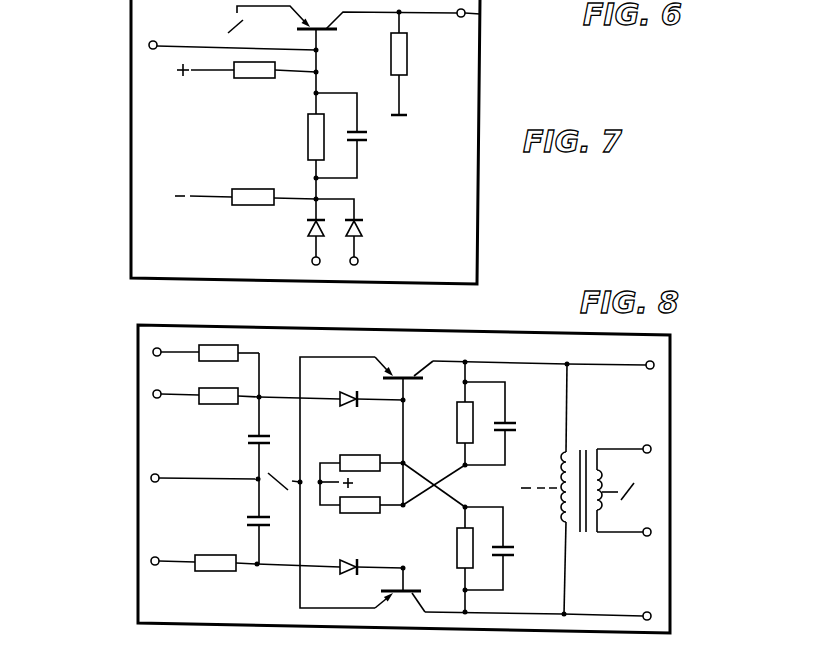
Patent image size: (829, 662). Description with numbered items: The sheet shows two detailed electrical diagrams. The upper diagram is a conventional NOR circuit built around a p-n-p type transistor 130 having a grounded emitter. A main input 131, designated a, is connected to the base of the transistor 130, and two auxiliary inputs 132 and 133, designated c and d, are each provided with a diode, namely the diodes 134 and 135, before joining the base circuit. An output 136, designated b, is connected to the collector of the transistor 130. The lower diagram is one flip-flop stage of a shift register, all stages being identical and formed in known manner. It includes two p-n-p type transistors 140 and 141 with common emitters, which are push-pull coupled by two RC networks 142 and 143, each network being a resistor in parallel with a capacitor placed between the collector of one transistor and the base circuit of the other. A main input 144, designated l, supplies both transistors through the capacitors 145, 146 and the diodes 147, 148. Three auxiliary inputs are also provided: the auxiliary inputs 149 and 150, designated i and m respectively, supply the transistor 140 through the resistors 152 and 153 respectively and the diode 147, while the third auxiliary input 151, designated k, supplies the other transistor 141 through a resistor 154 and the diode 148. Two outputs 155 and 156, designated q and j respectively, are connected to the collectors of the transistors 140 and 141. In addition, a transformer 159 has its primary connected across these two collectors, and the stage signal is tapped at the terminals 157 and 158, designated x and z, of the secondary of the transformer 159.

In FIG. 7, the p-n-p type transistor 130 is at (327, 36).
In FIG. 7, the main input 131 is at (153, 41).
In FIG. 7, the auxiliary input 132 is at (314, 265).
In FIG. 7, the auxiliary input 133 is at (354, 265).
In FIG. 7, the diode 134 is at (306, 228).
In FIG. 7, the diode 135 is at (364, 228).
In FIG. 7, the output 136 is at (481, 14).
In FIG. 8, the p-n-p type transistor 140 is at (410, 358).
In FIG. 8, the p-n-p type transistor 141 is at (402, 596).
In FIG. 8, the RC network 142 is at (458, 430).
In FIG. 8, the RC network 143 is at (456, 541).
In FIG. 8, the main input 144 is at (151, 478).
In FIG. 8, the capacitor 145 is at (249, 446).
In FIG. 8, the capacitor 146 is at (246, 520).
In FIG. 8, the diode 147 is at (350, 407).
In FIG. 8, the diode 148 is at (349, 561).
In FIG. 8, the auxiliary input 149 is at (153, 352).
In FIG. 8, the auxiliary input 150 is at (153, 394).
In FIG. 8, the auxiliary input 151 is at (151, 561).
In FIG. 8, the resistor 152 is at (240, 350).
In FIG. 8, the resistor 153 is at (215, 406).
In FIG. 8, the resistor 154 is at (215, 571).
In FIG. 8, the output 155 is at (654, 365).
In FIG. 8, the output 156 is at (651, 616).
In FIG. 8, the terminal 157 is at (651, 449).
In FIG. 8, the terminal 158 is at (651, 532).
In FIG. 8, the transformer 159 is at (582, 537).